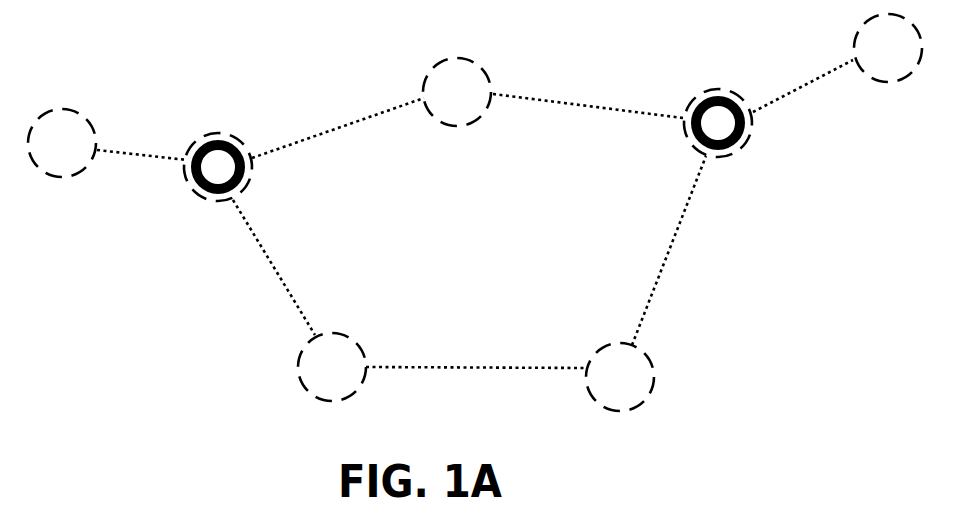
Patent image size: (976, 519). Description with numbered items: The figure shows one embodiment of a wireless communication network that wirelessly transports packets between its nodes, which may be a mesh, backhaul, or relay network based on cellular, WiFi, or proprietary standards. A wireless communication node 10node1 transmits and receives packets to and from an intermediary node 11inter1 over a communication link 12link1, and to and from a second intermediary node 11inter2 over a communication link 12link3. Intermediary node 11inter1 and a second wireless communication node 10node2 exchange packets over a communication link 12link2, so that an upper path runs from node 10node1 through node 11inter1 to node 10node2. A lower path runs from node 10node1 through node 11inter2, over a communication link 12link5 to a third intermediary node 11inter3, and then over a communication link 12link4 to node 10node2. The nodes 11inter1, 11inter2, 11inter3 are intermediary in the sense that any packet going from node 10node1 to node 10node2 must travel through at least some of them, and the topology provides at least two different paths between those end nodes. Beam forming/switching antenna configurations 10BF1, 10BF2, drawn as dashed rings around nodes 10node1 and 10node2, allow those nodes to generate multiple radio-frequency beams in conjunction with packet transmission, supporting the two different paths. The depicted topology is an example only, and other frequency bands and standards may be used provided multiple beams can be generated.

The wireless communication node 10node1 is at (206, 198).
The beam forming/switching antenna configuration 10BF1 is at (212, 140).
The wireless communication node 10node2 is at (692, 143).
The beam forming/switching antenna configuration 10BF2 is at (735, 146).
The intermediary node 11inter1 is at (428, 78).
The intermediary node 11inter2 is at (302, 383).
The intermediary node 11inter3 is at (592, 397).
The communication link 12link1 is at (332, 131).
The communication link 12link2 is at (600, 107).
The communication link 12link3 is at (280, 278).
The communication link 12link4 is at (661, 272).
The communication link 12link5 is at (510, 367).